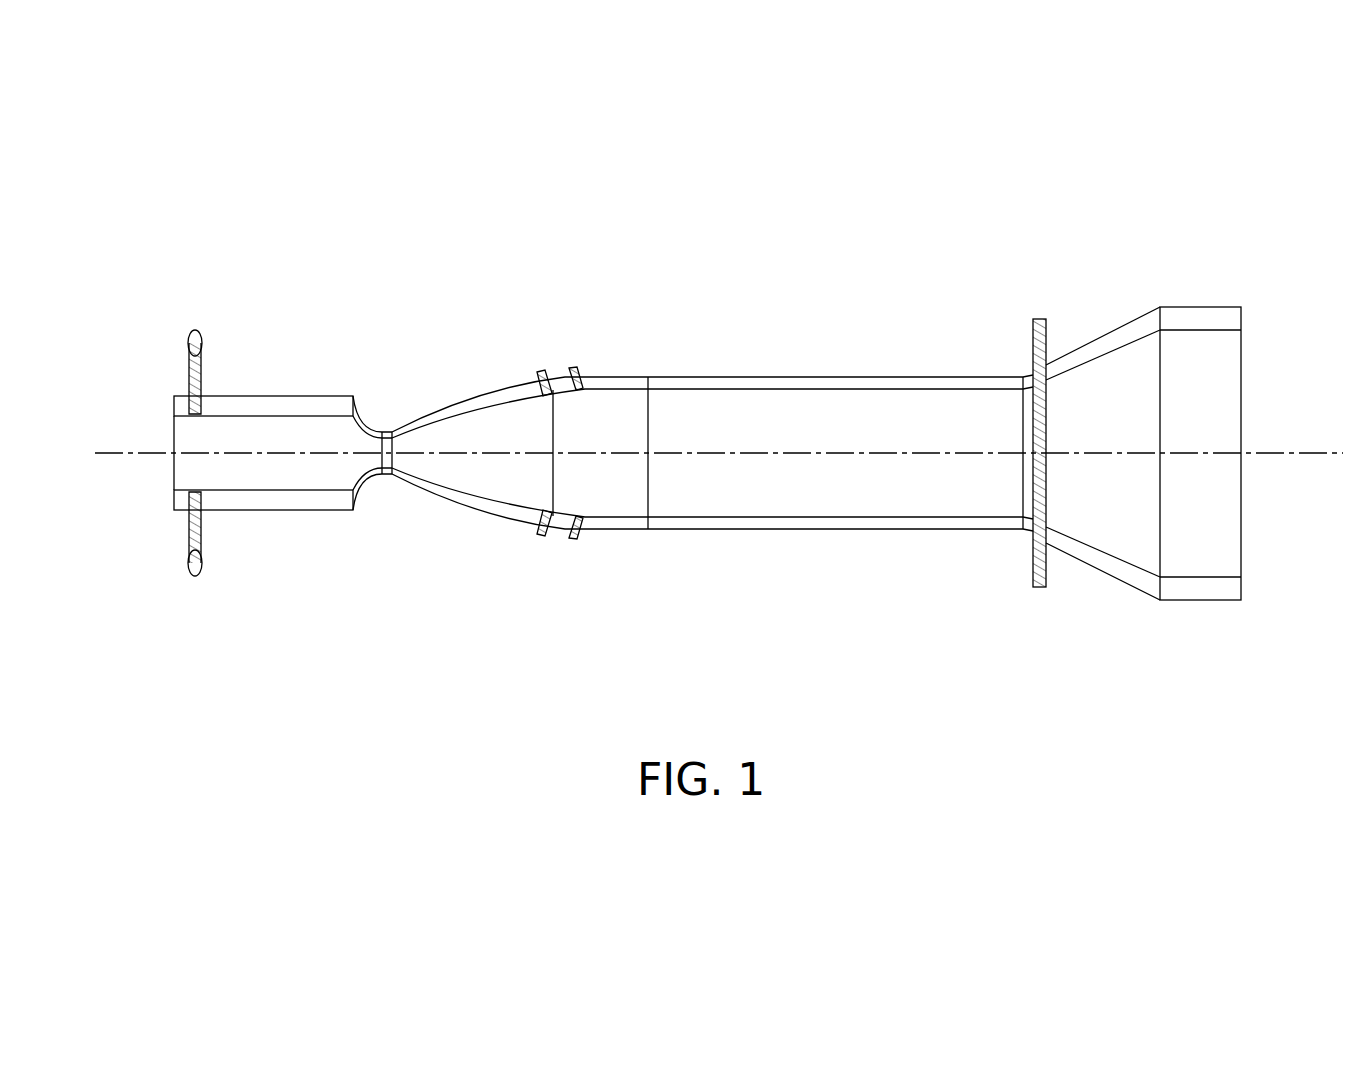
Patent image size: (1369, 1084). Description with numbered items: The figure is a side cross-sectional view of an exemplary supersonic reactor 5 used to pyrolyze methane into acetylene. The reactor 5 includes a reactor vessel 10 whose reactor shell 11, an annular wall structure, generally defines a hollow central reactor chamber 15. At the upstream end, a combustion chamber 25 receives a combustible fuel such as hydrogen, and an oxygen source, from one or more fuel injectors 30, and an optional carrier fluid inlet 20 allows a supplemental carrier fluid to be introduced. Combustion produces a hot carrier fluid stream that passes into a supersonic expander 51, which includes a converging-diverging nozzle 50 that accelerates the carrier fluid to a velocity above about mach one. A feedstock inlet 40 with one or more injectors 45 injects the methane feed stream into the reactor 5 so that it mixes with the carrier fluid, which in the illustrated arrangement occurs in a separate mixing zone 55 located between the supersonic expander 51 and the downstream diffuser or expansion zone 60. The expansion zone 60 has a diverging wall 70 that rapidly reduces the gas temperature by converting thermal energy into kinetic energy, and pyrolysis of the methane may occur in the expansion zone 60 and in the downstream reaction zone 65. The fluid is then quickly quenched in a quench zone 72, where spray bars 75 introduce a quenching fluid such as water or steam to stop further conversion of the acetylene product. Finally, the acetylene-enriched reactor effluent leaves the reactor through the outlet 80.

The supersonic reactor 5 is at (890, 298).
The reactor vessel 10 is at (493, 330).
The reactor shell 11 is at (834, 385).
The reactor chamber 15 is at (728, 412).
The carrier fluid inlet 20 is at (175, 452).
The combustion chamber 25 is at (287, 452).
The fuel injectors 30 is at (200, 360).
The feedstock inlet 40 is at (580, 539).
The injectors 45 is at (582, 386).
The converging-diverging nozzle 50 is at (377, 487).
The supersonic expander 51 is at (446, 552).
The mixing zone 55 is at (617, 475).
The expansion zone 60 is at (422, 443).
The reaction zone 65 is at (768, 497).
The diverging wall 70 is at (495, 503).
The quench zone 72 is at (1073, 614).
The spray bars 75 is at (1038, 318).
The outlet 80 is at (1231, 515).